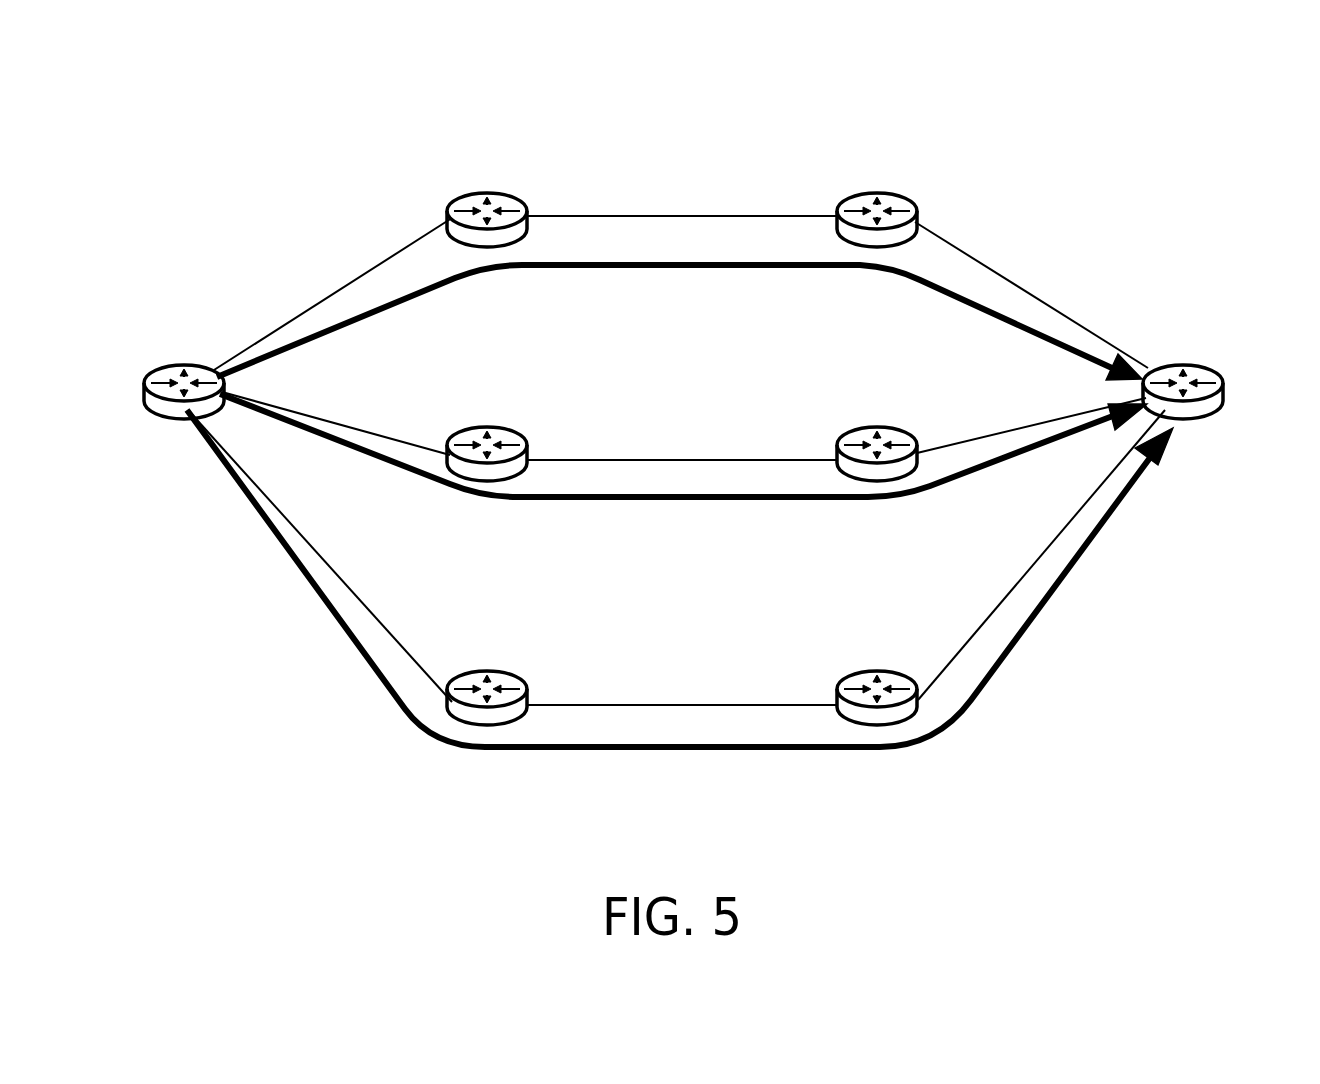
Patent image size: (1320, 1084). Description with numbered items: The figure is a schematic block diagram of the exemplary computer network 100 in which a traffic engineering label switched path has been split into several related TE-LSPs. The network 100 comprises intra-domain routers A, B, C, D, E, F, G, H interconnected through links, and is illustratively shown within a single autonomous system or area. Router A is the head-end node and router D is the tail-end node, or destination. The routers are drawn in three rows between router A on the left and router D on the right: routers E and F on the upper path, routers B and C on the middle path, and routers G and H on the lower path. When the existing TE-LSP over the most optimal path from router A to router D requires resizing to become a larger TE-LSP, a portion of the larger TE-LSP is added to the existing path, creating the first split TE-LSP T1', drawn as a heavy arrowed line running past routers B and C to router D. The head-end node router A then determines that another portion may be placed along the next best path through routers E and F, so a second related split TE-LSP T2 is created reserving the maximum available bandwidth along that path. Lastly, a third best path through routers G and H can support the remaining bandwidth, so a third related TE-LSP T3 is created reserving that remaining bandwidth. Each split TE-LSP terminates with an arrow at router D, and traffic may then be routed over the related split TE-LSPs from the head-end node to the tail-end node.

The computer network 100 is at (1114, 114).
The router A is at (174, 366).
The router B is at (470, 429).
The router C is at (852, 429).
The router D is at (1212, 420).
The router E is at (476, 195).
The router F is at (869, 195).
The router G is at (480, 673).
The router H is at (866, 673).
The first split TE-LSP T1' is at (683, 482).
The second related split TE-LSP T2 is at (658, 270).
The third related TE-LSP T3 is at (655, 752).